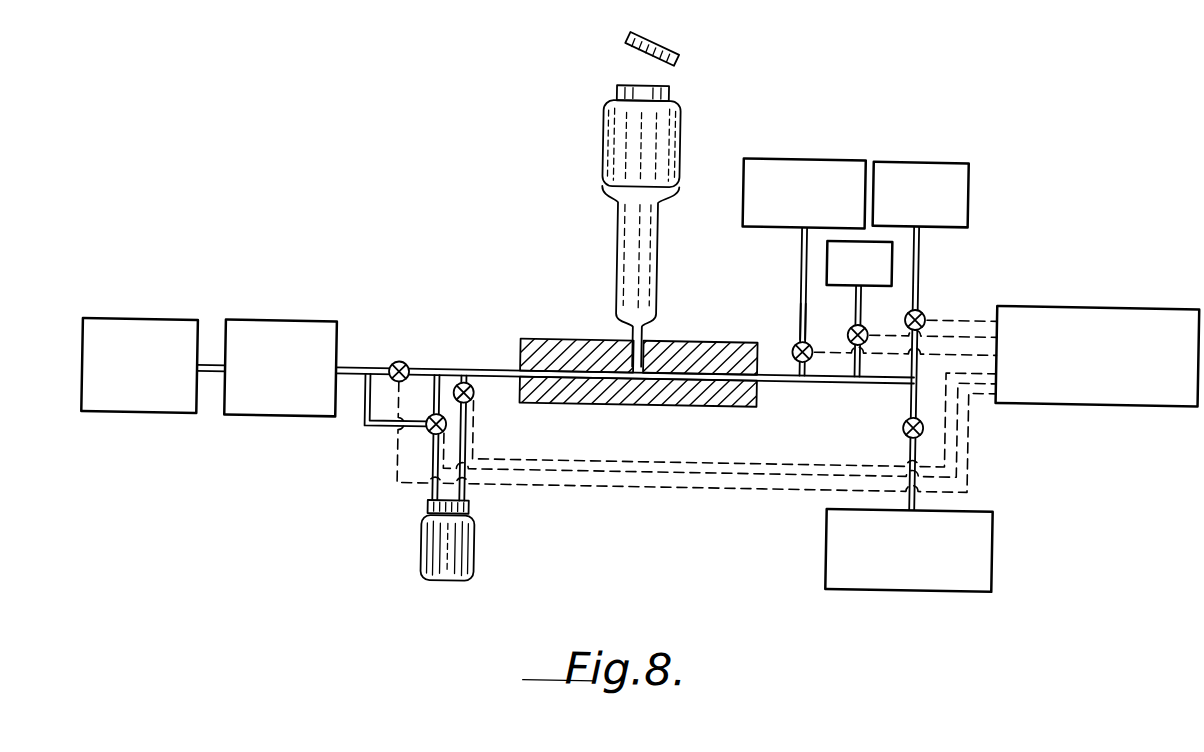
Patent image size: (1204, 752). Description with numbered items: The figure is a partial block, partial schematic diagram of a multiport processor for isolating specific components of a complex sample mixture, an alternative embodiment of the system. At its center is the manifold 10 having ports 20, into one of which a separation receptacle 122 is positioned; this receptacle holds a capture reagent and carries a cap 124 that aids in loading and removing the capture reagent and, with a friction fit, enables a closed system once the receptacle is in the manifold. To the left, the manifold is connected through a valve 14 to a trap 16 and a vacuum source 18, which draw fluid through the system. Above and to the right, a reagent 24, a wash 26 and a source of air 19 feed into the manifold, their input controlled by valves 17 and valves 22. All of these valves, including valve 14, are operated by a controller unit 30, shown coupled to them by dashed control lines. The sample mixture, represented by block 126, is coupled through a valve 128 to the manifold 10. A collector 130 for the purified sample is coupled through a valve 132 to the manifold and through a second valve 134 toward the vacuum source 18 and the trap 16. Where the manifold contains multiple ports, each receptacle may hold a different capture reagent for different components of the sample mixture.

The vacuum source 18 is at (163, 342).
The trap 16 is at (318, 331).
The valve for the vacuum source 14 is at (401, 366).
The manifold 10 is at (587, 350).
The ports 20 is at (667, 342).
The separation receptacle 122 is at (599, 158).
The cap 124 is at (694, 46).
The reagent 24 is at (809, 170).
The wash 26 is at (931, 163).
The valves 17 is at (861, 322).
The source of air 19 is at (806, 320).
The valves 22 is at (807, 339).
The controller unit 30 is at (1145, 275).
The valve 128 is at (903, 424).
The block 126 is at (829, 527).
The collector 130 is at (488, 556).
The valve 132 is at (472, 404).
The second valve 134 is at (428, 433).